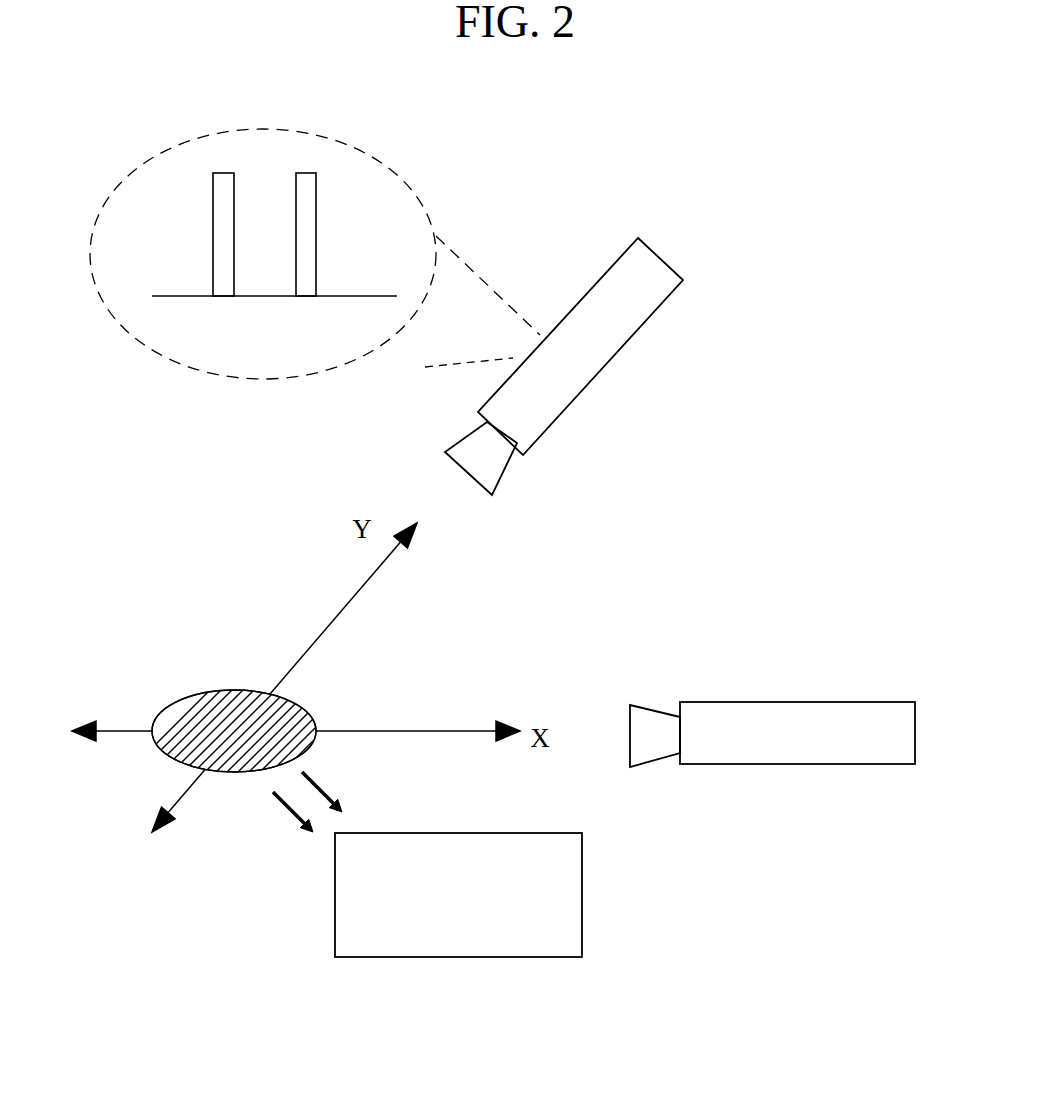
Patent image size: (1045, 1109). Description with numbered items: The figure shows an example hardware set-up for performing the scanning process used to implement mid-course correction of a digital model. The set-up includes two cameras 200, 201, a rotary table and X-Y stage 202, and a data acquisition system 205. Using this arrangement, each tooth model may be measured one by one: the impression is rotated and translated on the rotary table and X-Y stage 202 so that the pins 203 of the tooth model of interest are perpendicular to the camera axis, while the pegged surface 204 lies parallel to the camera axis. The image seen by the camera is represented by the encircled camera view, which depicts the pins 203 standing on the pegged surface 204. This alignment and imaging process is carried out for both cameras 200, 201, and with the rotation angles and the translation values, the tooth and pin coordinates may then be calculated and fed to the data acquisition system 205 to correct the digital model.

The camera 200 is at (670, 267).
The camera 201 is at (812, 702).
The rotary table and X-Y stage 202 is at (180, 698).
The pins 203 is at (315, 172).
The pegged surface 204 is at (192, 296).
The data acquisition system 205 is at (582, 893).